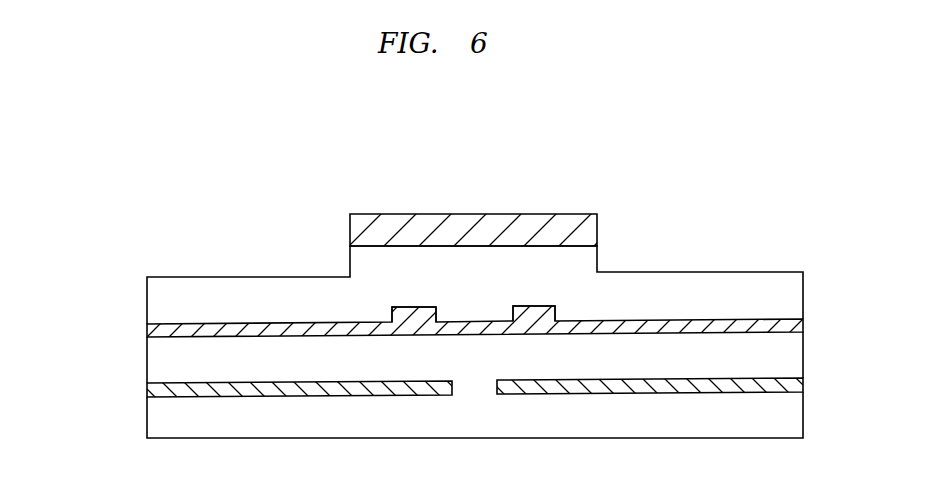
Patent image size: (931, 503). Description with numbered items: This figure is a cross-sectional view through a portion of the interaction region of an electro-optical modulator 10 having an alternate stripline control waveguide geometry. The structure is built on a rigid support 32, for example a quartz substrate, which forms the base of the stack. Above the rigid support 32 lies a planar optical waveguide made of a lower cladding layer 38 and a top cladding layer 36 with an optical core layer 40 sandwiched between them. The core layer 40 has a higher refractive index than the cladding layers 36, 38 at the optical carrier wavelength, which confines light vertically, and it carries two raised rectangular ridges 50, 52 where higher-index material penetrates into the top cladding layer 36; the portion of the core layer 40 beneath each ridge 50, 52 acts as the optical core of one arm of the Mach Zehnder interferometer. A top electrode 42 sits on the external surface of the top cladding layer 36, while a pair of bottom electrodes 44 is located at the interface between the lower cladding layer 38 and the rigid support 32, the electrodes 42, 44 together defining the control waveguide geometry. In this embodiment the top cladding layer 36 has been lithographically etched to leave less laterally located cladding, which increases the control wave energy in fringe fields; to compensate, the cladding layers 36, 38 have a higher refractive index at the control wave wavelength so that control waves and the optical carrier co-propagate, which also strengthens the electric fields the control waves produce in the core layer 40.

The electro-optical modulator 10 is at (98, 171).
The rigid support 32 is at (147, 433).
The top cladding layer 36 is at (849, 256).
The lower cladding layer 38 is at (849, 312).
The optical core layer 40 is at (147, 331).
The top electrode 42 is at (543, 215).
The bottom electrodes 44 is at (147, 388).
The raised rectangular ridge 50 is at (420, 307).
The raised rectangular ridge 52 is at (538, 307).